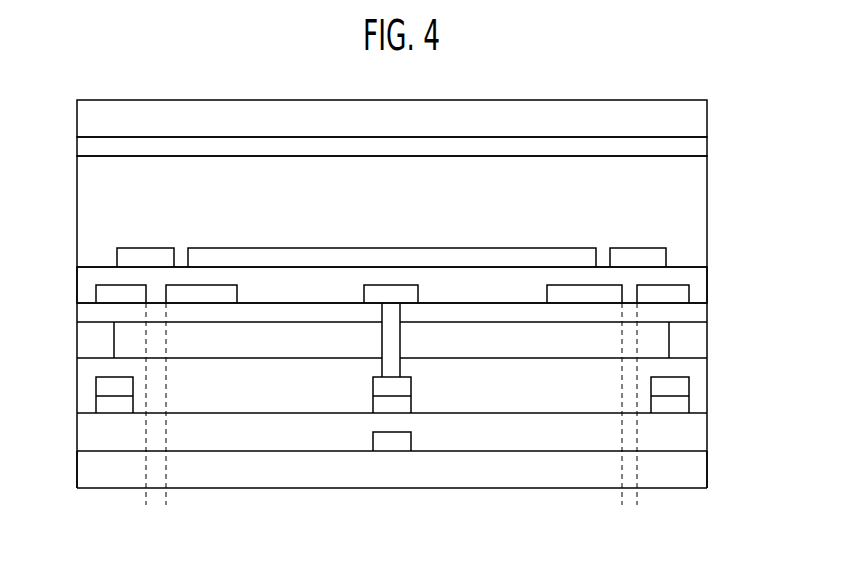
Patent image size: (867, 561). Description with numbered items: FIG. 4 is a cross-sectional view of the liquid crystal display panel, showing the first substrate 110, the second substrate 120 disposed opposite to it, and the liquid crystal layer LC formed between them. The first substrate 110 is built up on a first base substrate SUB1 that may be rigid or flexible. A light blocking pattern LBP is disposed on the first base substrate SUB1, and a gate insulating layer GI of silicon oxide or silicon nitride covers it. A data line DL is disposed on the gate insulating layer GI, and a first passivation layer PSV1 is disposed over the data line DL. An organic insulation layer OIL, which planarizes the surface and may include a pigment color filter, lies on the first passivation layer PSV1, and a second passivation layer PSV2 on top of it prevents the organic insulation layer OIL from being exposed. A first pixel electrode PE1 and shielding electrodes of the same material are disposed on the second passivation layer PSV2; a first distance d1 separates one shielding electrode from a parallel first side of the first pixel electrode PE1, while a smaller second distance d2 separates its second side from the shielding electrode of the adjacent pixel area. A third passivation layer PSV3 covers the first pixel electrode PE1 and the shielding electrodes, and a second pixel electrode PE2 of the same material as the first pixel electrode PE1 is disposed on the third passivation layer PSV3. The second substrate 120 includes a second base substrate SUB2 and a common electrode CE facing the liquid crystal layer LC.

The second base substrate SUB2 is at (698, 112).
The common electrode CE is at (698, 147).
The second substrate 120 is at (449, 132).
The liquid crystal layer LC is at (698, 200).
The second pixel electrode PE2 is at (341, 257).
The first pixel electrode PE1 is at (396, 292).
The third passivation layer PSV3 is at (698, 283).
The second passivation layer PSV2 is at (698, 316).
The organic insulation layer OIL is at (698, 346).
The first substrate 110 is at (415, 366).
The first passivation layer PSV1 is at (698, 384).
The data line DL is at (98, 385).
The gate insulating layer GI is at (698, 433).
The first base substrate SUB1 is at (426, 469).
The light blocking pattern LBP is at (394, 445).
The first distance d1 is at (203, 503).
The second distance d2 is at (672, 503).